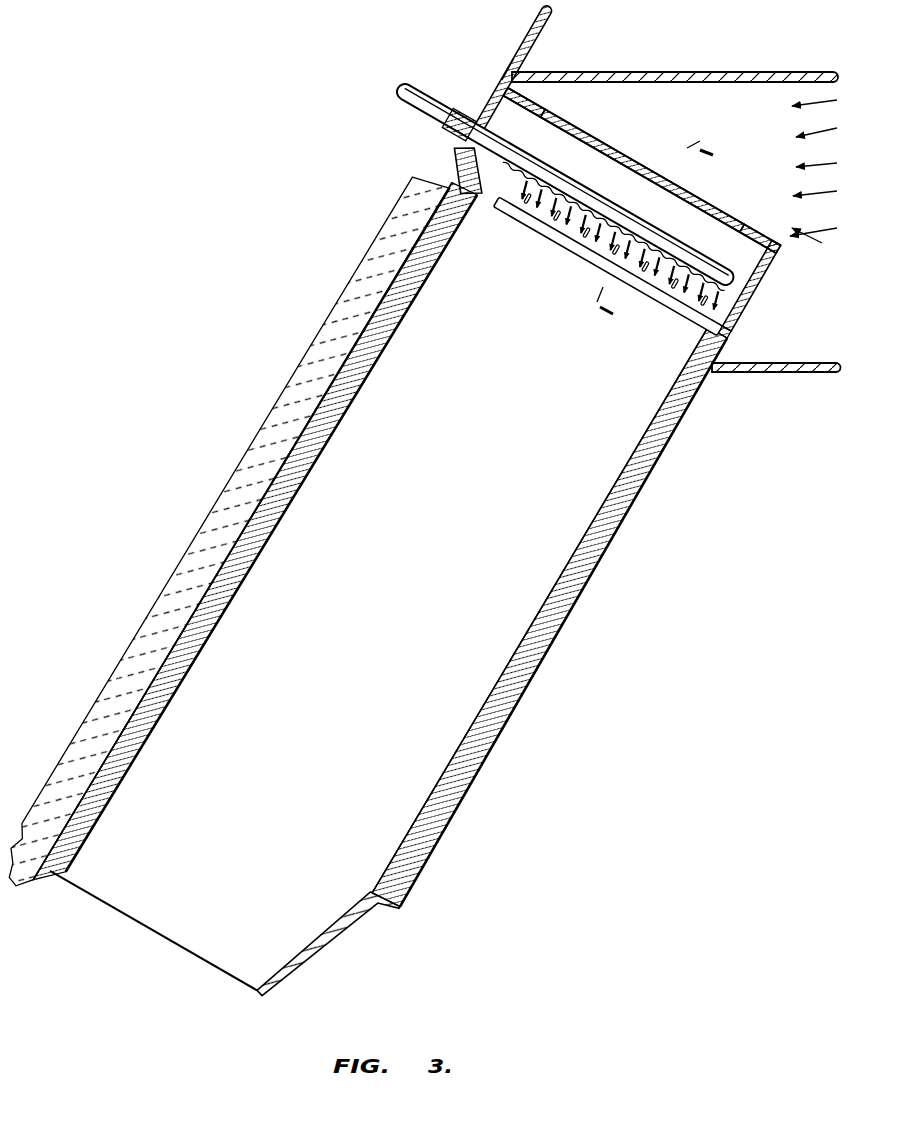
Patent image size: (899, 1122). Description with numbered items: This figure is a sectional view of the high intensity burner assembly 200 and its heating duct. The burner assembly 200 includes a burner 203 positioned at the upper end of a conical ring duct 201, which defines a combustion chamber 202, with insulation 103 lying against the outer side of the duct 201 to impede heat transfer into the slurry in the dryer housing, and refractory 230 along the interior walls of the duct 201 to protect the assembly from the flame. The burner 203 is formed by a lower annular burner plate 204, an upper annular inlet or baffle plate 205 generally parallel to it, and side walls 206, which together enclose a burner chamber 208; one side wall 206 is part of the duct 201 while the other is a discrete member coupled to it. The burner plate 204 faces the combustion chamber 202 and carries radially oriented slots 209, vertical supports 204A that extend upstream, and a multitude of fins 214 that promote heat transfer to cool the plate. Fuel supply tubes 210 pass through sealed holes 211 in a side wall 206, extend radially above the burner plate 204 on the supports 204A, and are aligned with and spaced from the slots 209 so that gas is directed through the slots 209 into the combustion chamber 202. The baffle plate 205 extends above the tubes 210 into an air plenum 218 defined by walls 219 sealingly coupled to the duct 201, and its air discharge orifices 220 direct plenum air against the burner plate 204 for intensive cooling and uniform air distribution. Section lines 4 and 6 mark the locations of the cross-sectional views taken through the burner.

The high intensity burner assembly 200 is at (268, 104).
The insulation 103 is at (247, 453).
The conical ring duct 201 is at (413, 230).
The refractory 230 is at (117, 738).
The combustion chamber 202 is at (570, 375).
The burner 203 is at (707, 197).
The burner plate 204 is at (473, 195).
The vertical supports 204A is at (530, 113).
The baffle plate 205 is at (653, 166).
The side walls 206 is at (485, 110).
The burner chamber 208 is at (643, 201).
The slots 209 is at (640, 289).
The fuel supply tubes 210 is at (396, 82).
The hole 211 is at (478, 107).
The fins 214 is at (531, 222).
The air plenum 218 is at (760, 128).
The walls 219 is at (810, 72).
The air discharge orifices 220 is at (605, 135).
The section line 4- 4 is at (652, 229).
The section line 6- 6 is at (657, 162).